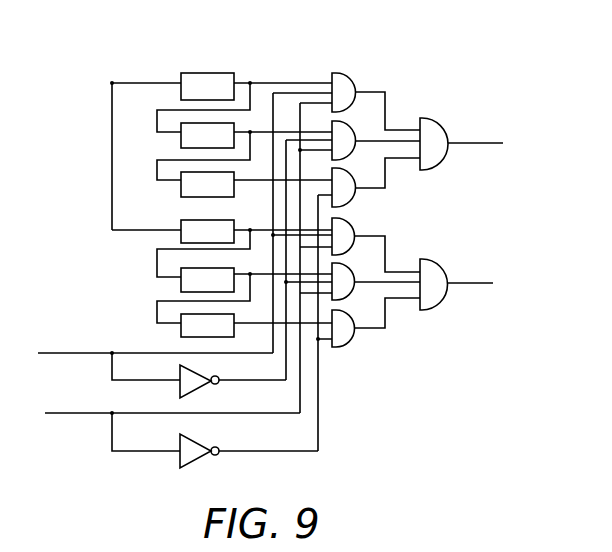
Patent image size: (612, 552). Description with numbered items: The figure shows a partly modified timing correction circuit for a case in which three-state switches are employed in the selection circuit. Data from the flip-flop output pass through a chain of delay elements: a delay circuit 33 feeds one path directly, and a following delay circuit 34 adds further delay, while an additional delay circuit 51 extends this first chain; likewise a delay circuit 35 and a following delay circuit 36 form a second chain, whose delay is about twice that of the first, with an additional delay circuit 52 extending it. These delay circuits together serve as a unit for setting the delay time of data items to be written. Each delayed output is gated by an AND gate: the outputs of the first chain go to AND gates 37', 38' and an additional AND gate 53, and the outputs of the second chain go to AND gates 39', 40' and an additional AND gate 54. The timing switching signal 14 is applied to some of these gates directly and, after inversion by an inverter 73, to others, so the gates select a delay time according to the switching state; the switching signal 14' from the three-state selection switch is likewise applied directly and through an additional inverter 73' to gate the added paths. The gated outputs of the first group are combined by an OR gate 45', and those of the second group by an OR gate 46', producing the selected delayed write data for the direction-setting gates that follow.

The delay circuit 33 is at (194, 96).
The delay circuit 34 is at (194, 145).
The additional delay circuit 51 is at (194, 194).
The delay circuit 35 is at (194, 242).
The delay circuit 36 is at (194, 290).
The additional delay circuit 52 is at (194, 336).
The AND gate 37' is at (376, 94).
The AND gate 38' is at (376, 137).
The additional AND gate 53 is at (343, 168).
The AND gate 39' is at (376, 239).
The AND gate 40' is at (376, 275).
The additional AND gate 54 is at (349, 342).
The OR gate 45' is at (461, 140).
The OR gate 46' is at (456, 280).
The timing switching signal 14 is at (155, 343).
The switching signal 14' is at (172, 427).
The inverter 73 is at (199, 382).
The additional inverter 73' is at (215, 447).